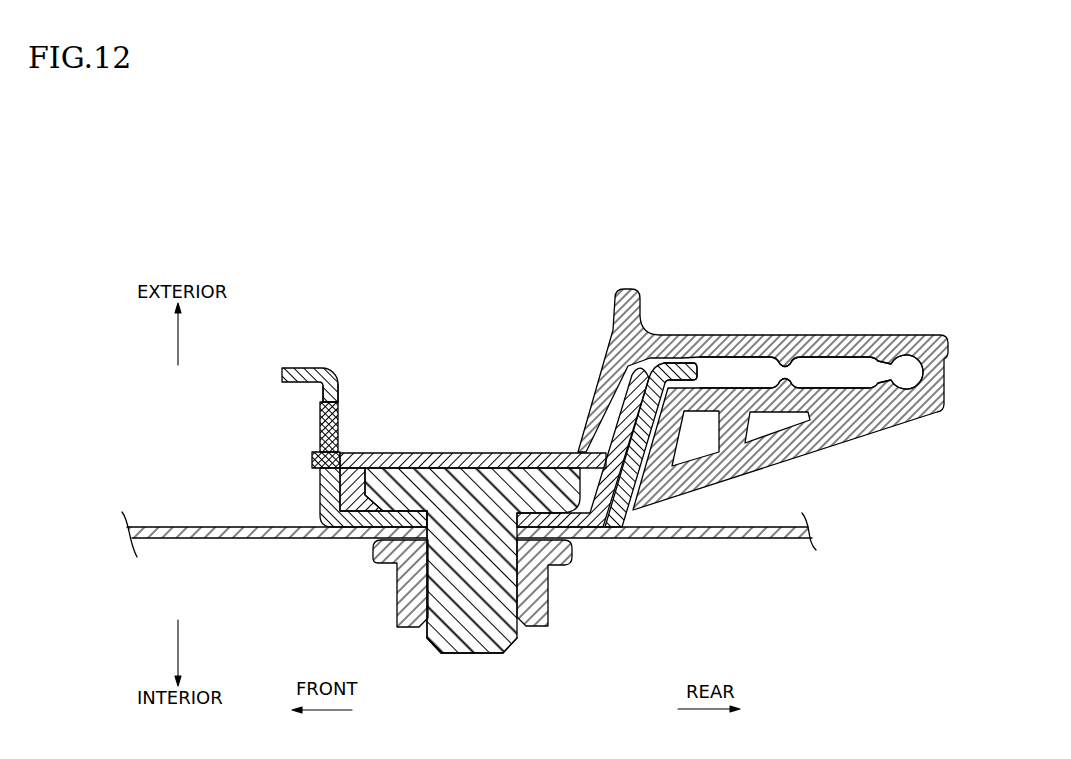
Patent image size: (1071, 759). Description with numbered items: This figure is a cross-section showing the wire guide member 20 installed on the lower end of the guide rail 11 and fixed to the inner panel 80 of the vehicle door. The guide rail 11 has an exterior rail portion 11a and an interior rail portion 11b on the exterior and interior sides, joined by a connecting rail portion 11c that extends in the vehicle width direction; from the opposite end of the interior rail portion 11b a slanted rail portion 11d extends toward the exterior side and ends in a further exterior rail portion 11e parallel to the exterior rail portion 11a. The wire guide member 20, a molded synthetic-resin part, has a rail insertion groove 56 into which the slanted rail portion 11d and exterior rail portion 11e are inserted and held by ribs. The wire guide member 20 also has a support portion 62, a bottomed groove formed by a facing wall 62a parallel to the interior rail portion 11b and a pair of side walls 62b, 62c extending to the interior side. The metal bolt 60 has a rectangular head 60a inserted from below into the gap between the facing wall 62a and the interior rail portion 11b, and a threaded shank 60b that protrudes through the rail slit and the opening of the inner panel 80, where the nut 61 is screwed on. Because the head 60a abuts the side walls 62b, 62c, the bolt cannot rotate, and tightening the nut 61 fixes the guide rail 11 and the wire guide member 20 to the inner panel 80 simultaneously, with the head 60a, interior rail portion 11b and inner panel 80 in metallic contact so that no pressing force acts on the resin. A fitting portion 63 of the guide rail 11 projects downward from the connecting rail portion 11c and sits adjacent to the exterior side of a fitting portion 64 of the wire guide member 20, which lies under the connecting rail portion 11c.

The guide rail 11 is at (538, 435).
The exterior rail portion 11a is at (303, 372).
The interior rail portion 11b is at (362, 530).
The connecting rail portion 11c is at (338, 396).
The slanted rail portion 11d is at (637, 431).
The exterior rail portion 11e is at (700, 360).
The wire guide member 20 is at (842, 308).
The rail insertion groove 56 is at (763, 360).
The metal bolt 60 is at (469, 600).
The head 60a is at (408, 497).
The shank 60b is at (480, 645).
The nut 61 is at (540, 610).
The support portion 62 is at (443, 489).
The facing wall 62a is at (498, 452).
The side wall 62b is at (345, 501).
The side wall 62c is at (607, 540).
The fitting portion 63 is at (340, 418).
The fitting portion 64 is at (314, 462).
The inner panel 80 is at (178, 532).